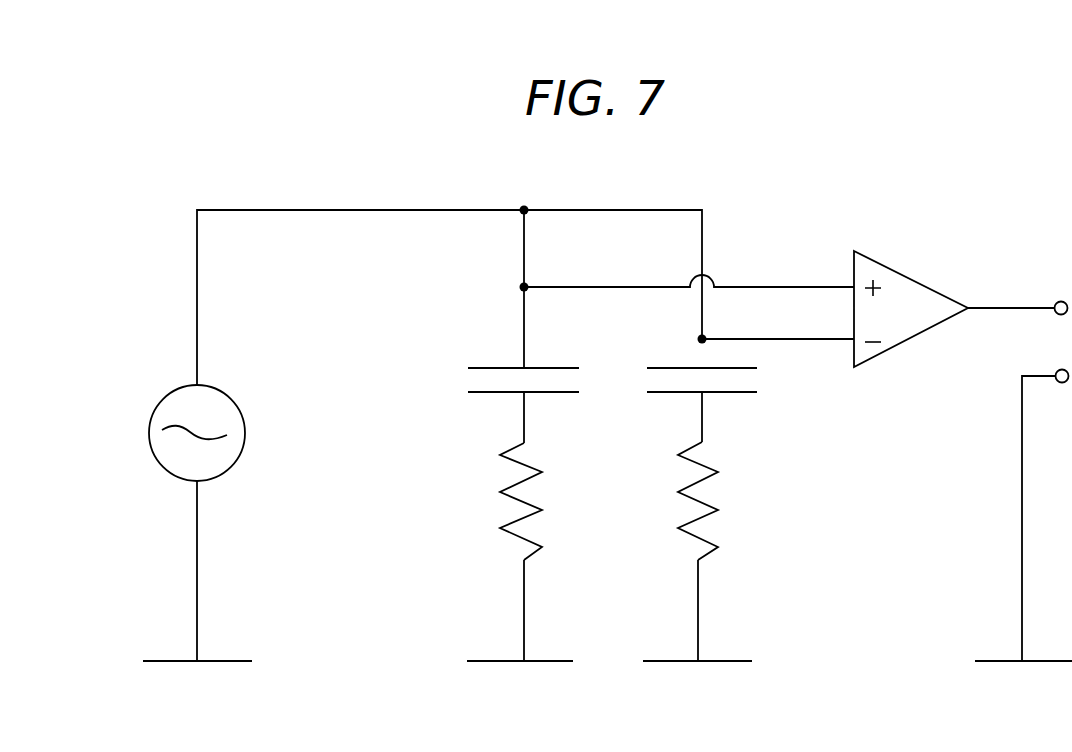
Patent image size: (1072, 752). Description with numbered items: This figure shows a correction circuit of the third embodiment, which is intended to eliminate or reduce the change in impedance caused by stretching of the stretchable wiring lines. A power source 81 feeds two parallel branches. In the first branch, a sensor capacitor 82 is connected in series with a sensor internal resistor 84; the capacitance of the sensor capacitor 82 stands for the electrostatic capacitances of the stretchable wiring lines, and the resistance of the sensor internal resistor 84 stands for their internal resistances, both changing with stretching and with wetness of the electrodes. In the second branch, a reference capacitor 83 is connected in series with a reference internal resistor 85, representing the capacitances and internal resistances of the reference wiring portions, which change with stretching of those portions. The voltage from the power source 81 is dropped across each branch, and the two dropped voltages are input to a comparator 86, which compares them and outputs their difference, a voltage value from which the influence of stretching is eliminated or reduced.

The power source 81 is at (232, 400).
The sensor capacitor 82 is at (495, 393).
The reference capacitor 83 is at (733, 393).
The sensor internal resistor 84 is at (518, 517).
The reference internal resistor 85 is at (700, 498).
The comparator 86 is at (912, 276).